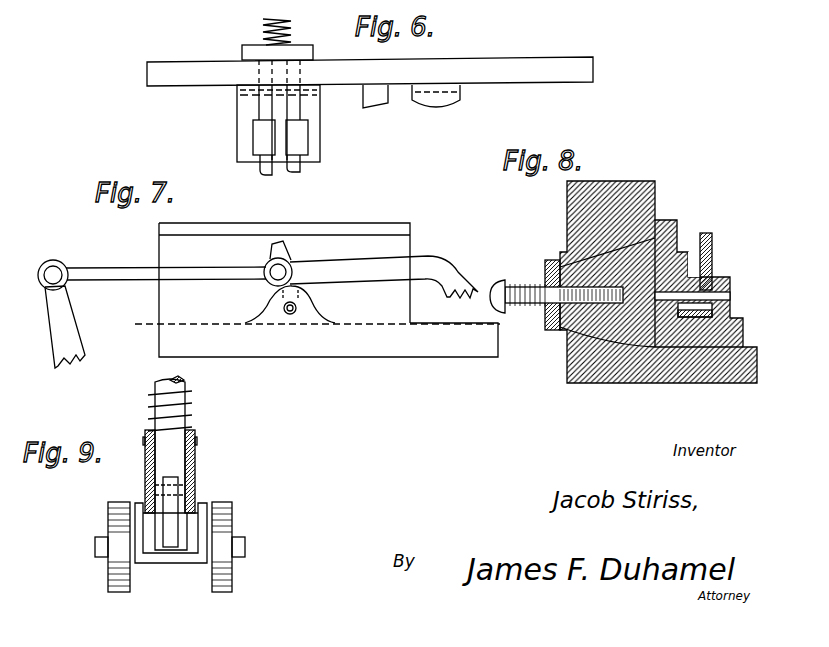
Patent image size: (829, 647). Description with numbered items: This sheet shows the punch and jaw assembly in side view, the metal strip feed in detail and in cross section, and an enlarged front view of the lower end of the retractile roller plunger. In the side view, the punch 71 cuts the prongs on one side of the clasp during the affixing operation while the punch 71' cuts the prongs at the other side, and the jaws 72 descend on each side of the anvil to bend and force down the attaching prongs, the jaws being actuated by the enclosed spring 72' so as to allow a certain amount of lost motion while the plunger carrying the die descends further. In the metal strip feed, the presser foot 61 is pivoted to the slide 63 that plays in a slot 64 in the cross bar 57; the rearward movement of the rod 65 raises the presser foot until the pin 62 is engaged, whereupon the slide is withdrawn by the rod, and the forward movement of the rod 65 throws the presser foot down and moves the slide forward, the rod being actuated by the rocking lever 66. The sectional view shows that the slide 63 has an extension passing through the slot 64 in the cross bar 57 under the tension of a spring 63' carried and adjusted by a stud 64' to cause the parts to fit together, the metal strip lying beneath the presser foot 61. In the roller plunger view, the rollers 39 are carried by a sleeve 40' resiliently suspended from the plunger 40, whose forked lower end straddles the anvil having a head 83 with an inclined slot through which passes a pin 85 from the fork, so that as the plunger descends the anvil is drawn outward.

In FIG. 6, the punch 71 is at (370, 103).
In FIG. 6, the punch 71' is at (363, 113).
In FIG. 6, the jaws 72 is at (299, 173).
In FIG. 6, the enclosed spring 72' is at (253, 32).
In FIG. 7, the presser foot 61 is at (475, 262).
In FIG. 8, the presser foot 61 is at (712, 240).
In FIG. 7, the pin 62 is at (272, 258).
In FIG. 7, the slide 63 is at (317, 309).
In FIG. 8, the slide 63 is at (710, 288).
In FIG. 7, the rod 65 is at (130, 270).
In FIG. 7, the rocking lever 66 is at (78, 325).
In FIG. 8, the cross bar 57 is at (567, 200).
In FIG. 8, the slot 64 is at (651, 263).
In FIG. 8, the spring 63' is at (556, 281).
In FIG. 8, the stud 64' is at (530, 318).
In FIG. 9, the rollers 39 is at (108, 512).
In FIG. 9, the plunger 40 is at (186, 444).
In FIG. 9, the sleeve 40' is at (189, 471).
In FIG. 9, the head 83 is at (148, 505).
In FIG. 9, the pin 85 is at (150, 510).